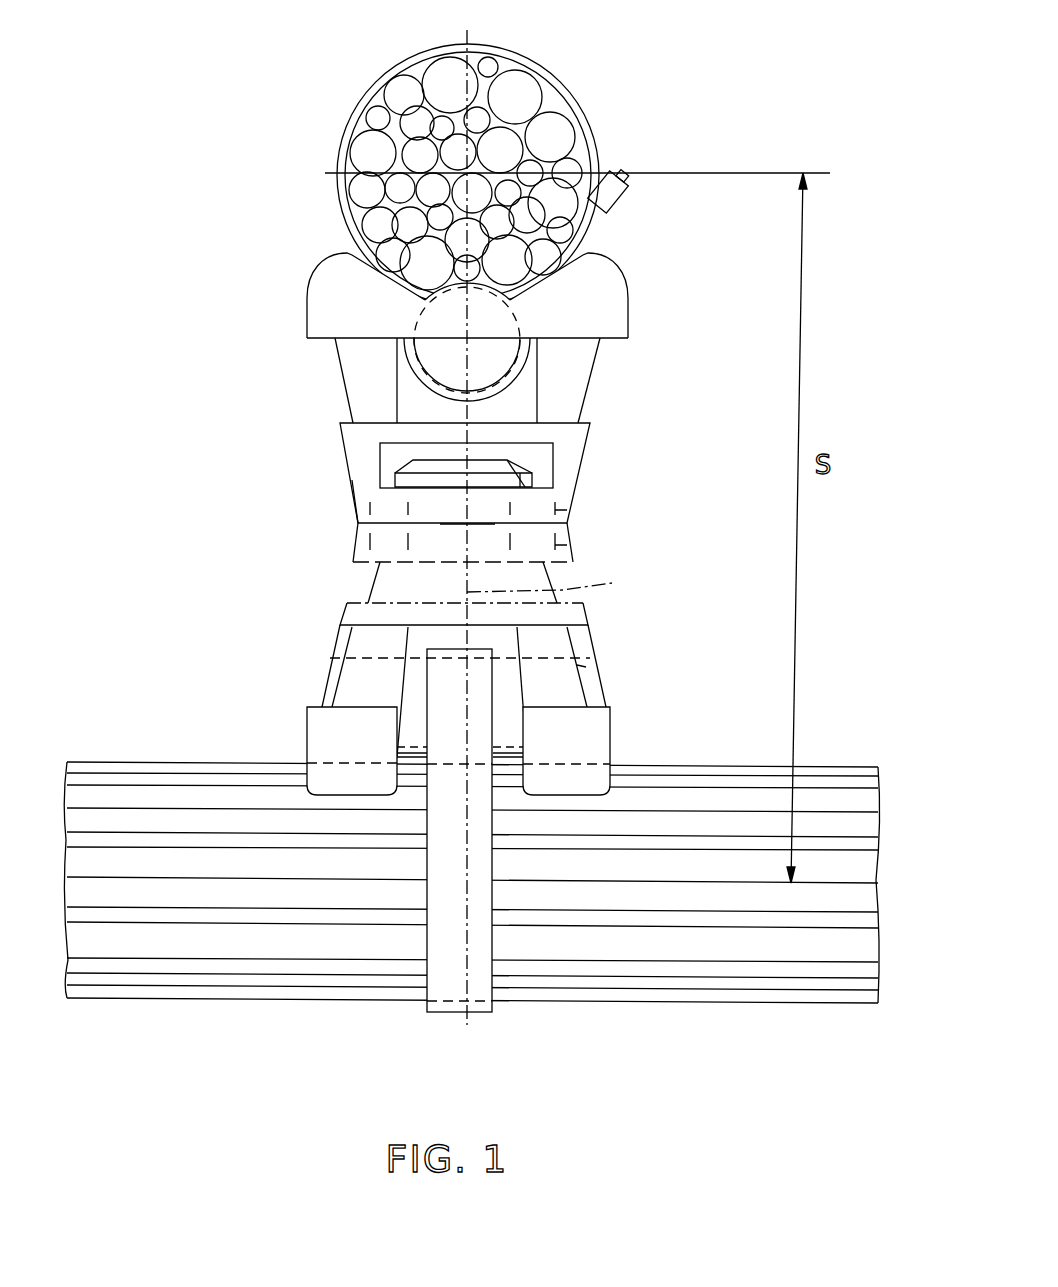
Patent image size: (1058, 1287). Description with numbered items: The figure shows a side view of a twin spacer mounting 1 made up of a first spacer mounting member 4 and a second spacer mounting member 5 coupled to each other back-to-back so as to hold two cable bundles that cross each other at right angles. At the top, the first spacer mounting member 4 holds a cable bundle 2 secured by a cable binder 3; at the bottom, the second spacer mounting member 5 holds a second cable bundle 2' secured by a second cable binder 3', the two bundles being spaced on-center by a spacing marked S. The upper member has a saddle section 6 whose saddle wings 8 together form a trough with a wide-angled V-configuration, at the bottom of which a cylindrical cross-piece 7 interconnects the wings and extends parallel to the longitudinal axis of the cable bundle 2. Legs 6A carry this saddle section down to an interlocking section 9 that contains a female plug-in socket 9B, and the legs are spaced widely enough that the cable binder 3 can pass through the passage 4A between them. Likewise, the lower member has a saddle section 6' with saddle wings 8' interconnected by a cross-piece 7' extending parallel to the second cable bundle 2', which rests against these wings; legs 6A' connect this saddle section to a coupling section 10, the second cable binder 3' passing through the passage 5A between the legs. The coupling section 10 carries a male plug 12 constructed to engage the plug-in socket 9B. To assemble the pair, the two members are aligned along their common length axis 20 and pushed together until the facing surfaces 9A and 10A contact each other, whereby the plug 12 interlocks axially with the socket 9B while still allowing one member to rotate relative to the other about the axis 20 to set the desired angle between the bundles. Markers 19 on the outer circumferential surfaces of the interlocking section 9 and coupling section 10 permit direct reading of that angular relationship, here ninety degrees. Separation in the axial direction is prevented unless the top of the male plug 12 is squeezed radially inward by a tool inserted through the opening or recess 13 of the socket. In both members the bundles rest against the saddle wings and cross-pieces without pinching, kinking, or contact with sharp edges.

The twin spacer mounting 1 is at (866, 356).
The cable bundle 2 is at (430, 173).
The cable binder 3 is at (456, 233).
The first spacer mounting member 4 is at (290, 316).
The passage 4A is at (415, 404).
The second spacer mounting member 5 is at (318, 643).
The passage 5A is at (397, 641).
The saddle section 6 is at (338, 295).
The legs 6A is at (484, 380).
The legs 6A' is at (440, 644).
The saddle section 6' is at (317, 751).
The cross-piece 7 is at (520, 355).
The cross-piece 7' is at (617, 667).
The saddle wings 8 is at (603, 295).
The saddle wings 8' is at (636, 751).
The interlocking section 9 is at (331, 469).
The facing surface 9A is at (378, 511).
The female plug-in socket 9B is at (383, 497).
The coupling section 10 is at (385, 583).
The facing surface 10A is at (454, 527).
The male plug 12 is at (535, 481).
The opening or recess 13 is at (543, 455).
The markers 19 is at (557, 545).
The common length axis 20 is at (562, 583).
The second cable bundle 2' is at (471, 909).
The second cable binder 3' is at (506, 853).